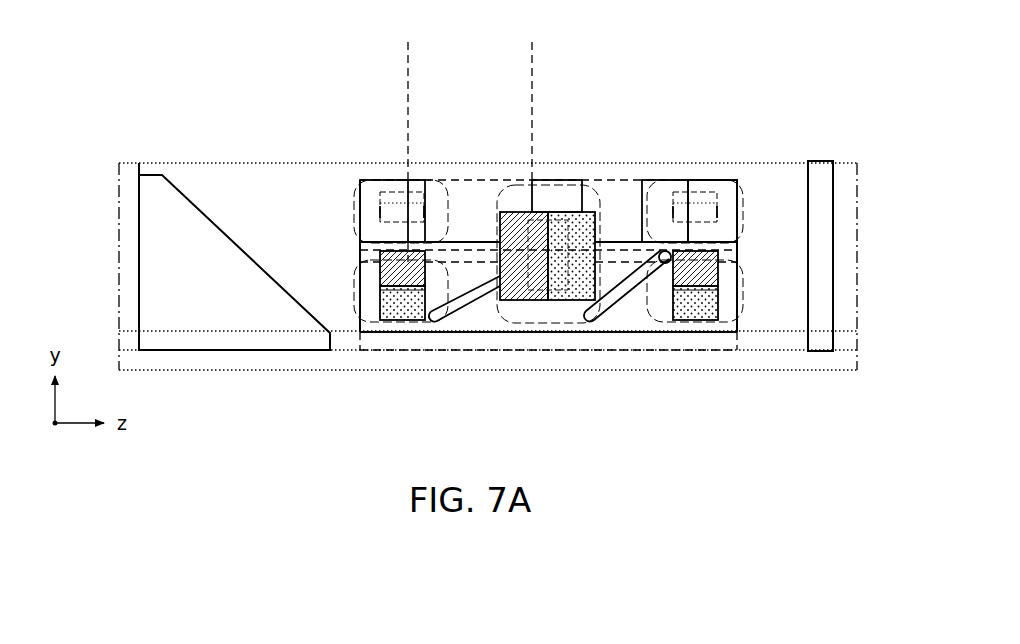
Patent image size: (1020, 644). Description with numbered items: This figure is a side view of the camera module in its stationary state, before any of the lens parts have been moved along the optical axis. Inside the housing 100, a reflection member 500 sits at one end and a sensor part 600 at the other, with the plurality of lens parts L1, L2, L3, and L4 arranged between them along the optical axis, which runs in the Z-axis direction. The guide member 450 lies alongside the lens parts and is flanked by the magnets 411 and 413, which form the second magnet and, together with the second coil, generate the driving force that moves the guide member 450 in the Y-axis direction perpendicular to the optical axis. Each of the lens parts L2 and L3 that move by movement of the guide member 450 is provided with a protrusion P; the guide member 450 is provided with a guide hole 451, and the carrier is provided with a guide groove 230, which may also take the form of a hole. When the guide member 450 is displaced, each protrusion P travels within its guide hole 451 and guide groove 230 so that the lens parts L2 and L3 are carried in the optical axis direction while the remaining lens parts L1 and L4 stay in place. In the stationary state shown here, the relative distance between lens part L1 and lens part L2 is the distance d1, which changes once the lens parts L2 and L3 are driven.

The housing 100 is at (202, 358).
The reflection member 500 is at (148, 260).
The sensor part 600 is at (825, 240).
The guide member 450 is at (643, 321).
The magnet 411 is at (400, 314).
The magnet 413 is at (715, 320).
The guide hole 451 is at (477, 292).
The guide groove 230 is at (485, 257).
The lens part L1 is at (377, 193).
The lens part L2 is at (553, 193).
The lens part L3 is at (665, 193).
The lens part L4 is at (730, 193).
The protrusion P is at (555, 302).
The relative distance d1 is at (409, 50).